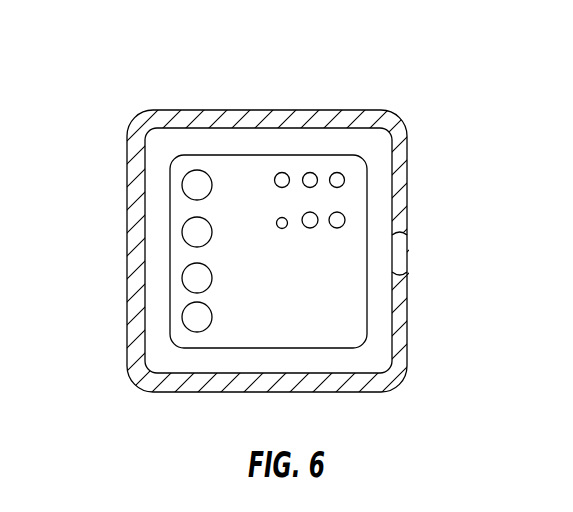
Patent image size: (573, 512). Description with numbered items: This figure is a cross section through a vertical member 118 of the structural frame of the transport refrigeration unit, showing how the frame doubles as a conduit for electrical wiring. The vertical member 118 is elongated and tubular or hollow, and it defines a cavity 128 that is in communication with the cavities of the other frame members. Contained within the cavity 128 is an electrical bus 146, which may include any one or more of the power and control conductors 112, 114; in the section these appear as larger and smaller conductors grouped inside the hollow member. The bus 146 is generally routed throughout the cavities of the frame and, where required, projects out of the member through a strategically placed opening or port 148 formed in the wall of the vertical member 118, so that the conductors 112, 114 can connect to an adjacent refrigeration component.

The vertical member 118 is at (128, 247).
The cavity 128 is at (380, 160).
The electrical bus 146 is at (274, 148).
The opening or port 148 is at (400, 258).
The power conductors 112 is at (212, 313).
The control conductors 114 is at (306, 209).